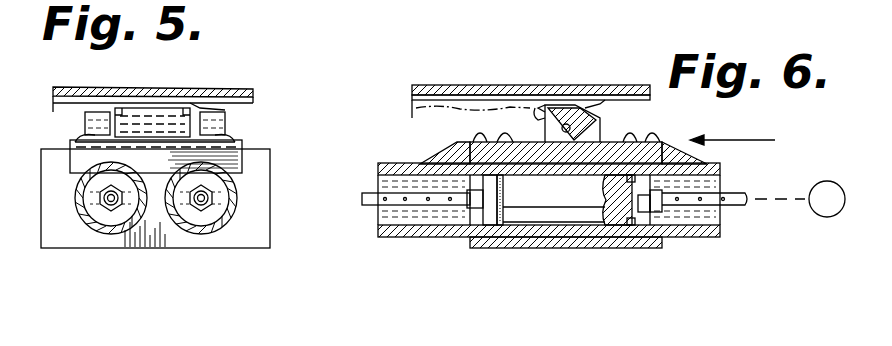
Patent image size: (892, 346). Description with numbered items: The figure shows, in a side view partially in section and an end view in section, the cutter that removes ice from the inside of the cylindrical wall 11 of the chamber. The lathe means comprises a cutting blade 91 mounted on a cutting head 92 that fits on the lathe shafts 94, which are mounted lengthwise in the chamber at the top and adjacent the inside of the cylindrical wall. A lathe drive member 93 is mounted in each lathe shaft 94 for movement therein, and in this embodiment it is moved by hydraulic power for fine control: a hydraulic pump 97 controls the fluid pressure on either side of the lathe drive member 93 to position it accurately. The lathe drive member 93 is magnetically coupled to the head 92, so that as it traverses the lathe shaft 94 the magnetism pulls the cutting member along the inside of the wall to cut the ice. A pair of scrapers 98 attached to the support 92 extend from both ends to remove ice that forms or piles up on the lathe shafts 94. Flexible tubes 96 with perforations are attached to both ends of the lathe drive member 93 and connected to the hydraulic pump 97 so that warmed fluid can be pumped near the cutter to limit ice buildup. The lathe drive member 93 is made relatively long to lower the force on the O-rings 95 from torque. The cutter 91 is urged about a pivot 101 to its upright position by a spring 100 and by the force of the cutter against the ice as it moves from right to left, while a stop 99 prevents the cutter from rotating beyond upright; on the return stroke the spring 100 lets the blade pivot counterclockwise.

In FIG. 5, the cylindrical wall 11 is at (240, 88).
In FIG. 6, the cylindrical wall 11 is at (420, 86).
In FIG. 5, the cutting blade 91 is at (150, 105).
In FIG. 6, the cutting blade 91 is at (563, 106).
In FIG. 5, the cutting head 92 is at (245, 228).
In FIG. 6, the cutting head 92 is at (486, 246).
In FIG. 6, the lathe drive member 93 is at (578, 210).
In FIG. 5, the lathe shaft 94 is at (190, 222).
In FIG. 6, the lathe shaft 94 is at (697, 238).
In FIG. 6, the O-ring 95 is at (631, 222).
In FIG. 5, the flexible tube 96 is at (112, 210).
In FIG. 6, the flexible tube 96 is at (371, 207).
In FIG. 6, the hydraulic pump 97 is at (828, 218).
In FIG. 5, the scraper 98 is at (233, 161).
In FIG. 6, the scraper 98 is at (455, 148).
In FIG. 5, the stop 99 is at (195, 106).
In FIG. 6, the stop 99 is at (616, 92).
In FIG. 5, the spring 100 is at (115, 108).
In FIG. 6, the spring 100 is at (535, 110).
In FIG. 5, the pivot 101 is at (115, 126).
In FIG. 6, the pivot 101 is at (539, 201).